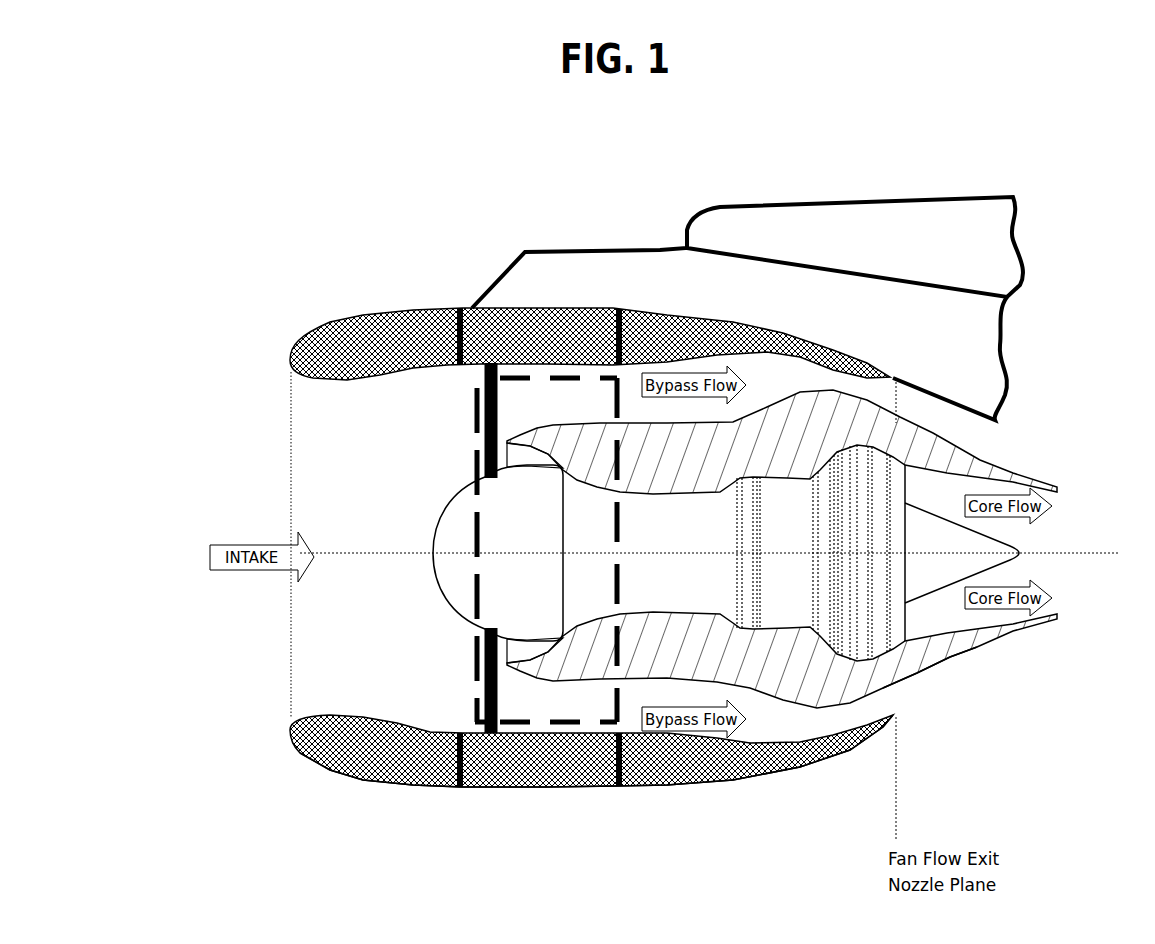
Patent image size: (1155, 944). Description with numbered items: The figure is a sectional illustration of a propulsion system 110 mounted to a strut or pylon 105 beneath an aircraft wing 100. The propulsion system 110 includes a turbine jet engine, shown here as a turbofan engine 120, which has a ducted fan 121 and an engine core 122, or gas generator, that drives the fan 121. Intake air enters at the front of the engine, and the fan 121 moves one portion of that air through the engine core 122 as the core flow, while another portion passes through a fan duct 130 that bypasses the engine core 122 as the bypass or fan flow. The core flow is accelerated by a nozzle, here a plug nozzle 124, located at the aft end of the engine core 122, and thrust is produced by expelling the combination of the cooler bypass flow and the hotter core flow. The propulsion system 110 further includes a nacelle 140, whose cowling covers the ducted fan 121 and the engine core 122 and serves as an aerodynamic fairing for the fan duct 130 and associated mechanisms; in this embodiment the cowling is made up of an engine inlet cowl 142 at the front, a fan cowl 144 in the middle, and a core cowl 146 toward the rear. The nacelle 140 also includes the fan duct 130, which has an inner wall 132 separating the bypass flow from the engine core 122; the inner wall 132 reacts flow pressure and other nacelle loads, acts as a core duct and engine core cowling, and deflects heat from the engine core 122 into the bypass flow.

The aircraft wing 100 is at (903, 195).
The pylon 105 is at (1004, 375).
The propulsion system 110 is at (403, 276).
The turbofan engine 120 is at (443, 493).
The ducted fan 121 is at (474, 393).
The engine core 122 is at (704, 542).
The plug nozzle 124 is at (1013, 546).
The fan duct 130 is at (957, 658).
The inner wall 132 is at (905, 690).
The nacelle 140 is at (312, 762).
The engine inlet cowl 142 is at (367, 781).
The fan cowl 144 is at (579, 788).
The core cowl 146 is at (770, 779).